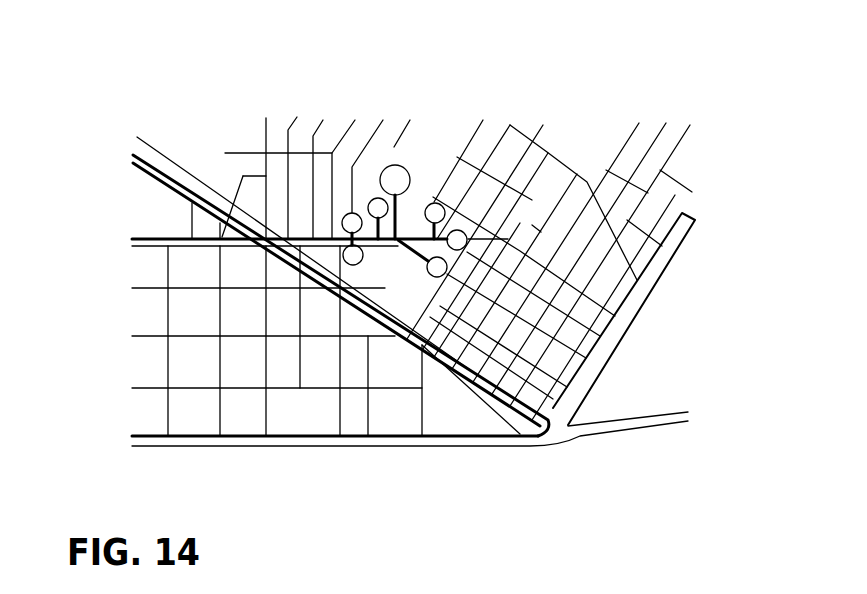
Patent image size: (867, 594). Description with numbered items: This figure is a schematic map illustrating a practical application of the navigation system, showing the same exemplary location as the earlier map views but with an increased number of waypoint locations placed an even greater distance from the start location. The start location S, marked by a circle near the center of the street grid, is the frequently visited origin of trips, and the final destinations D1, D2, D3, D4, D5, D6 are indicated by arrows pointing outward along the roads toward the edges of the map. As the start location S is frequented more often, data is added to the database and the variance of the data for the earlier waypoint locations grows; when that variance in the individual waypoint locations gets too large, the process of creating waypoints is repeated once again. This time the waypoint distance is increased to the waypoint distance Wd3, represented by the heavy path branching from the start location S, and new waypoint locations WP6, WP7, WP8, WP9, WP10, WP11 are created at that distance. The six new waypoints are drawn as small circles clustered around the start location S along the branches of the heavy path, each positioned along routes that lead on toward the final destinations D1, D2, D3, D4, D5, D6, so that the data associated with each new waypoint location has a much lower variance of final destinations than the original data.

The final destination D1 is at (422, 107).
The final destination D2 is at (707, 232).
The final destination D3 is at (688, 405).
The final destination D4 is at (127, 442).
The final destination D5 is at (123, 243).
The final destination D6 is at (130, 157).
The waypoint distance Wd3 is at (402, 228).
The start location S is at (395, 180).
The waypoint location WP6 is at (346, 232).
The waypoint location WP7 is at (355, 265).
The waypoint location WP8 is at (378, 219).
The waypoint location WP9 is at (432, 224).
The waypoint location WP10 is at (461, 250).
The waypoint location WP11 is at (447, 272).